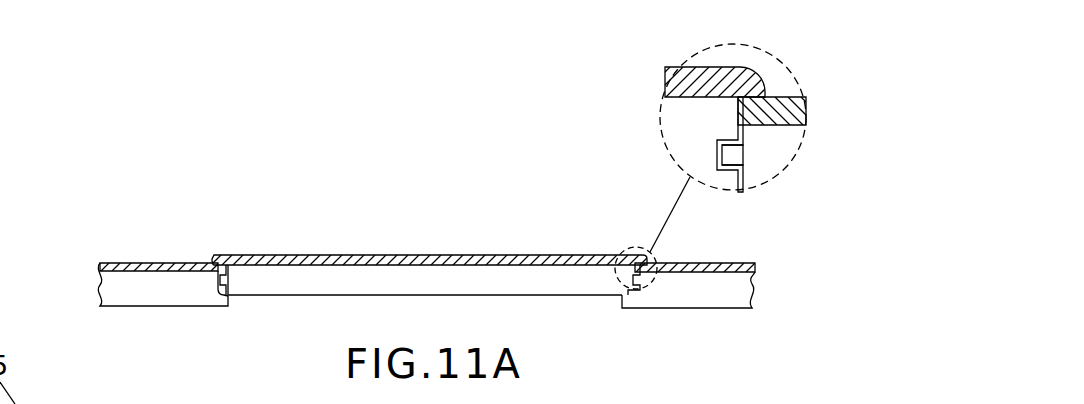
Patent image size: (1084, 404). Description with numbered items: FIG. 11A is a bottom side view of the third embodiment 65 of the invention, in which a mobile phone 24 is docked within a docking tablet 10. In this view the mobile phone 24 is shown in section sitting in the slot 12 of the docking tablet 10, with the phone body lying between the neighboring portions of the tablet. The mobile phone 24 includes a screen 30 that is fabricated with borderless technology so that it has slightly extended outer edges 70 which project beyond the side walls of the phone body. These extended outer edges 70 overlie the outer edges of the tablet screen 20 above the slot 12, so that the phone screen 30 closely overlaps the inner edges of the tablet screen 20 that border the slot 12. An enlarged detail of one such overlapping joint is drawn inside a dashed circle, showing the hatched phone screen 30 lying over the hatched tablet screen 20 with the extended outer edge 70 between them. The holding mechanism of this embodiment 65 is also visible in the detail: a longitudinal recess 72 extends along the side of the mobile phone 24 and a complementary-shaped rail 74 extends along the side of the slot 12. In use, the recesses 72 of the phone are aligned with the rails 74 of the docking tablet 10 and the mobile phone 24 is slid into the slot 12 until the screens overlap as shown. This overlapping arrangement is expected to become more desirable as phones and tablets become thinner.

The docking tablet 10 is at (712, 300).
The slot 12 is at (233, 297).
The tablet screen 20 is at (757, 266).
The mobile phone 24 is at (430, 290).
The screen 30 is at (342, 255).
The third embodiment 65 is at (278, 187).
The extended outer edges 70 is at (214, 258).
The longitudinal recesses 72 is at (717, 153).
The rails 74 is at (733, 152).